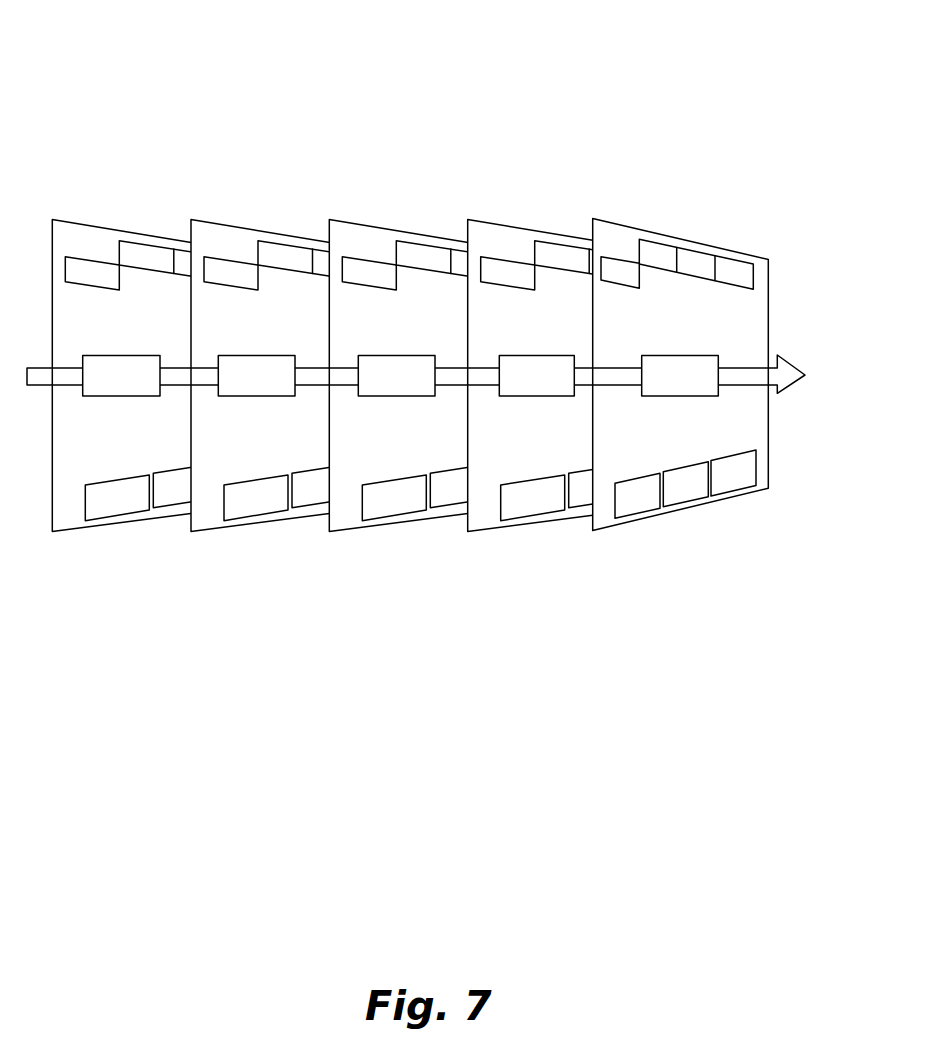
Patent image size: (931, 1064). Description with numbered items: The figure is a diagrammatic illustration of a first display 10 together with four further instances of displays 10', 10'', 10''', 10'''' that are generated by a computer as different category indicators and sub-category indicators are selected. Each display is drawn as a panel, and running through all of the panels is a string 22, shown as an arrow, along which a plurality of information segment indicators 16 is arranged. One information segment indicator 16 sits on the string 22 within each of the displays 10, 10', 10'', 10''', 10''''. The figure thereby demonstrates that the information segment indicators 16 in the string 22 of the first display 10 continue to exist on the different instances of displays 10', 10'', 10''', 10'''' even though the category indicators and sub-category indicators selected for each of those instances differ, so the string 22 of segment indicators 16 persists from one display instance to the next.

The display 10 is at (148, 281).
The display instance 10' is at (289, 281).
The display instance 10'' is at (432, 281).
The display instance 10''' is at (571, 281).
The display instance 10'''' is at (705, 282).
The information segment indicator 16 is at (117, 396).
The string 22 is at (797, 383).